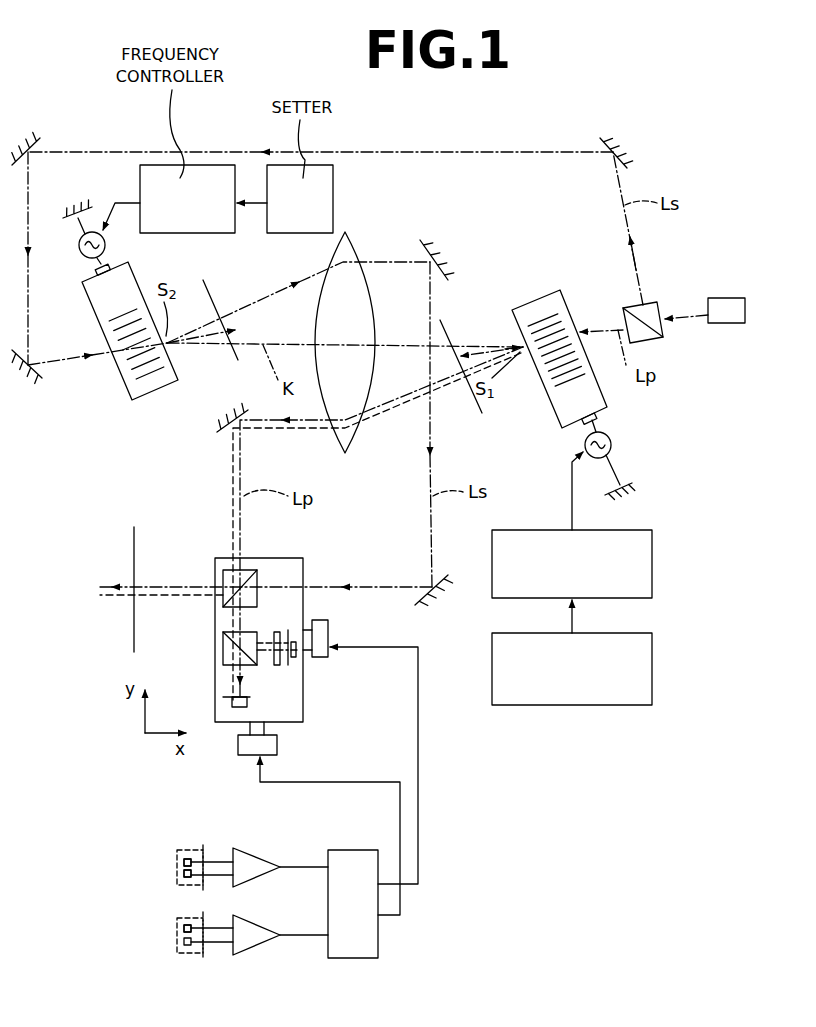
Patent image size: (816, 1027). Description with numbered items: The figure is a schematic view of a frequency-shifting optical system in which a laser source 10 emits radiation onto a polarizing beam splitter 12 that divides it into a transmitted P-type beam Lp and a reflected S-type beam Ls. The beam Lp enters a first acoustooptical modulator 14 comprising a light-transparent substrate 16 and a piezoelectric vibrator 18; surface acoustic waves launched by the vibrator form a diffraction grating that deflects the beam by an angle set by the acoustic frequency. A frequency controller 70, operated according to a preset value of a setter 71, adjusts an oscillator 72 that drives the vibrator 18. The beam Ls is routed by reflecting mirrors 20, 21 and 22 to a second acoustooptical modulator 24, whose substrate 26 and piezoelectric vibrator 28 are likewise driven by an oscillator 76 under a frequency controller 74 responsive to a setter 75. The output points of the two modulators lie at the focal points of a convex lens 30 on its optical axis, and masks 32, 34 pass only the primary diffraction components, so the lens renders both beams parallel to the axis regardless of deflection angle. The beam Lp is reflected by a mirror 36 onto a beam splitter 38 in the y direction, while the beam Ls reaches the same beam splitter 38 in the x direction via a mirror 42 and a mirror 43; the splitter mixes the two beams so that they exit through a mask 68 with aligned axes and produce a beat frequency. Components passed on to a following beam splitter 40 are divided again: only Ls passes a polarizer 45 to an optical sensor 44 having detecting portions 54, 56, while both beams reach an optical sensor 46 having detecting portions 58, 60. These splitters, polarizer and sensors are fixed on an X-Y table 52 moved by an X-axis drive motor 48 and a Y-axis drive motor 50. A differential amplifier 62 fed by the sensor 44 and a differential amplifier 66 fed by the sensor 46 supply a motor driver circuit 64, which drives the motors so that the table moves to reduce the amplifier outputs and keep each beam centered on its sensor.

The laser source 10 is at (725, 298).
The polarizing beam splitter 12 is at (647, 308).
The first acoustooptical modulator 14 is at (561, 332).
The light-transparent substrate 16 is at (560, 302).
The piezoelectric vibrator 18 is at (604, 426).
The reflecting mirror 20 is at (603, 144).
The reflecting mirror 21 is at (36, 145).
The reflecting mirror 22 is at (36, 372).
The second acoustooptical modulator 24 is at (130, 361).
The light-transparent substrate 26 is at (152, 388).
The piezoelectric vibrator 28 is at (95, 270).
The convex lens 30 is at (346, 252).
The mask 32 is at (478, 405).
The mask 34 is at (234, 352).
The mirror 36 is at (227, 436).
The beam splitter 38 is at (230, 570).
The beam splitter 40 is at (222, 650).
The mirror 42 is at (422, 250).
The mirror 43 is at (438, 582).
The optical sensor 44 is at (298, 658).
The polarizer 45 is at (278, 640).
The optical sensor 46 is at (248, 702).
The X-axis drive motor 48 is at (330, 630).
The Y-axis drive motor 50 is at (277, 748).
The X-Y table 52 is at (288, 566).
The detecting portion 54 is at (184, 930).
The detecting portion 56 is at (186, 948).
The detecting portion 58 is at (184, 862).
The detecting portion 60 is at (184, 874).
The differential amplifier 62 is at (260, 942).
The motor driver circuit 64 is at (352, 958).
The differential amplifier 66 is at (258, 862).
The mask 68 is at (134, 542).
The frequency controller 70 is at (648, 557).
The setter 71 is at (648, 690).
The oscillator 72 is at (611, 451).
The frequency controller 74 is at (220, 233).
The setter 75 is at (330, 192).
The oscillator 76 is at (80, 250).